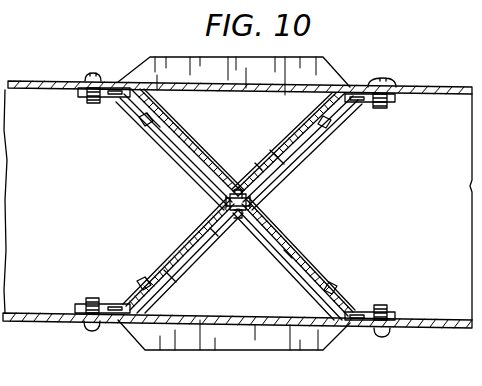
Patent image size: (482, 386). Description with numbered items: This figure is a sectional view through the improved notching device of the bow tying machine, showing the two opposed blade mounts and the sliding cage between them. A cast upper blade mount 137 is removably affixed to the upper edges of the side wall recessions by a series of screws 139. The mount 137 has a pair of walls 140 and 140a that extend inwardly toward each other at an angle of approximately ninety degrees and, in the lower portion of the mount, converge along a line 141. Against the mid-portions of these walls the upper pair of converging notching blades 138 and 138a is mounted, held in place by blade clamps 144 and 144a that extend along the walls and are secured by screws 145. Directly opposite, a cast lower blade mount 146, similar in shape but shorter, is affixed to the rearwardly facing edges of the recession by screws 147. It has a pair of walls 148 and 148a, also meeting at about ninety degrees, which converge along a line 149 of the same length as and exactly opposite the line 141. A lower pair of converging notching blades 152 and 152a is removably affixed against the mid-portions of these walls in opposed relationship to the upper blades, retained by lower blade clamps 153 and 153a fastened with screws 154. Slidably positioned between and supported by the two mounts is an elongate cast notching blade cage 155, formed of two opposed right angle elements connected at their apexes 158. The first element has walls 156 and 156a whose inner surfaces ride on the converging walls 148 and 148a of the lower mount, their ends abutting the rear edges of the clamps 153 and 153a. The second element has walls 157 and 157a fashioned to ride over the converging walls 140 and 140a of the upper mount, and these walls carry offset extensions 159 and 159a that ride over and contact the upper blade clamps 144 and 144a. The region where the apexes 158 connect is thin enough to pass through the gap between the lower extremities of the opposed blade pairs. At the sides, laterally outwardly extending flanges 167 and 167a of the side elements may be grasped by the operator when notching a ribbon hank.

The upper blade mount 137 is at (100, 98).
The notching blade 138 is at (193, 228).
The notching blade 138a is at (197, 165).
The screws 139 is at (85, 78).
The wall 140 is at (170, 262).
The wall 140a is at (178, 140).
The line of convergence 141 is at (224, 202).
The blade clamp 144 is at (122, 320).
The blade clamp 144a is at (132, 46).
The screws 145 is at (141, 122).
The lower blade mount 146 is at (370, 104).
The screws 147 is at (393, 79).
The wall 148 is at (303, 262).
The wall 148a is at (318, 140).
The line of convergence 149 is at (258, 202).
The notching blade 152 is at (288, 242).
The notching blade 152a is at (290, 168).
The lower blade clamp 153 is at (347, 326).
The lower blade clamp 153a is at (352, 88).
The screws 154 is at (333, 124).
The notching blade cage 155 is at (236, 192).
The wall 156 is at (287, 252).
The wall 156a is at (278, 156).
The wall 157 is at (213, 234).
The wall 157a is at (260, 168).
The apexes 158 is at (238, 216).
The offset extension 159 is at (168, 274).
The offset extension 159a is at (150, 121).
The flange 167 is at (256, 350).
The flange 167a is at (213, 60).